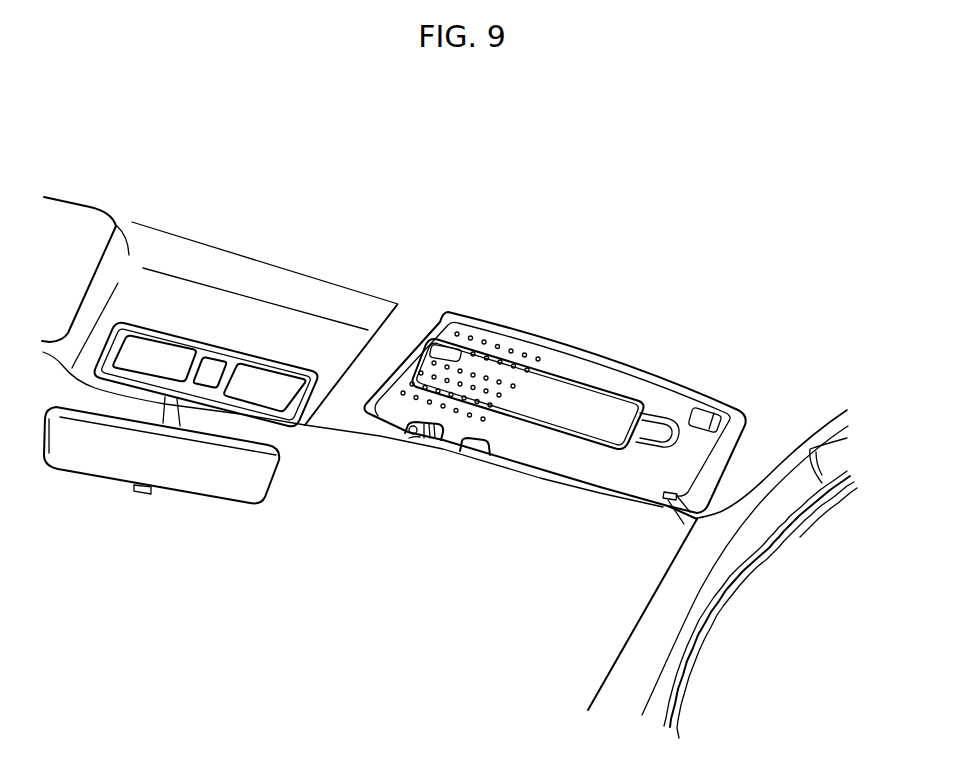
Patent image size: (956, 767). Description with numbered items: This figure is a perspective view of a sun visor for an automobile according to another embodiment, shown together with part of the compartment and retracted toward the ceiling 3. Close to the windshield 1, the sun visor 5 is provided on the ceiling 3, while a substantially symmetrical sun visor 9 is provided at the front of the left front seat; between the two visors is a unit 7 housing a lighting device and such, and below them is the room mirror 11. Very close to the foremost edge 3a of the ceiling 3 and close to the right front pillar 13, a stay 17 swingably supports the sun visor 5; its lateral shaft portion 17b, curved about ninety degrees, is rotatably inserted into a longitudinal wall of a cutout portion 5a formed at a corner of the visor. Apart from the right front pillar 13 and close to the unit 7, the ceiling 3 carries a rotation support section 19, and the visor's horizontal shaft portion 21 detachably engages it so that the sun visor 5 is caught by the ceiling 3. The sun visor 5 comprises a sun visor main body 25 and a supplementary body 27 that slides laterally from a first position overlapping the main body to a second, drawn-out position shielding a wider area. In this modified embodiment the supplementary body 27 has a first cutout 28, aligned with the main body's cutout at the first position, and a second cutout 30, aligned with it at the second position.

The windshield 1 is at (369, 611).
The ceiling 3 is at (634, 288).
The foremost edge 3a is at (557, 484).
The sun visor 5 is at (519, 330).
The cutout portion 5a is at (697, 519).
The unit 7 is at (261, 316).
The sun visor 9 is at (78, 226).
The room mirror 11 is at (102, 463).
The right front pillar 13 is at (644, 650).
The stay 17 is at (634, 537).
The lateral shaft portion 17b is at (677, 510).
The rotation support section 19 is at (422, 438).
The horizontal shaft portion 21 is at (408, 442).
The sun visor main body 25 is at (733, 431).
The supplementary body 27 is at (610, 377).
The first cutout 28 is at (430, 438).
The second cutout 30 is at (474, 442).